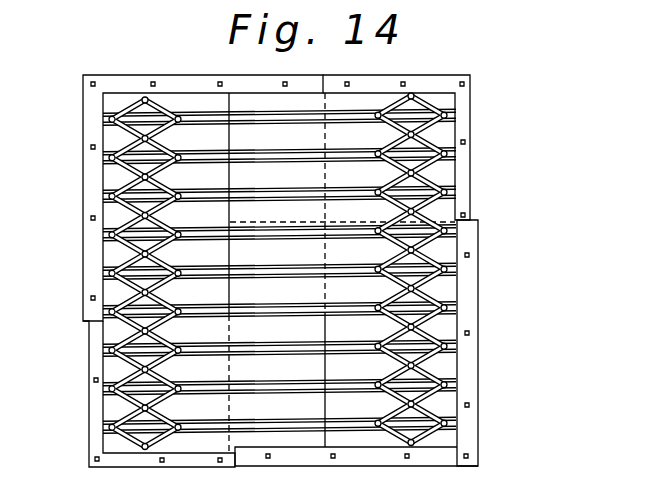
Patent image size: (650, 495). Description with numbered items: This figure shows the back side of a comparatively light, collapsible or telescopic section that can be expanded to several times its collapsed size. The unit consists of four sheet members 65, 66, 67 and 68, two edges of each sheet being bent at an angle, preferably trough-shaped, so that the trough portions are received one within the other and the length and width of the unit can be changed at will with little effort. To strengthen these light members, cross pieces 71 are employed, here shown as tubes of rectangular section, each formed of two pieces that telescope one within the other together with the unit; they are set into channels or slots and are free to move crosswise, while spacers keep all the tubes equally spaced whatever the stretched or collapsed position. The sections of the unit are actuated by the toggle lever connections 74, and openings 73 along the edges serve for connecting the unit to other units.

The member 65 is at (475, 332).
The member 66 is at (475, 187).
The member 67 is at (95, 407).
The member 68 is at (92, 287).
The cross piece 71 is at (212, 426).
The openings 73 is at (468, 141).
The toggle lever connections 74 is at (432, 107).